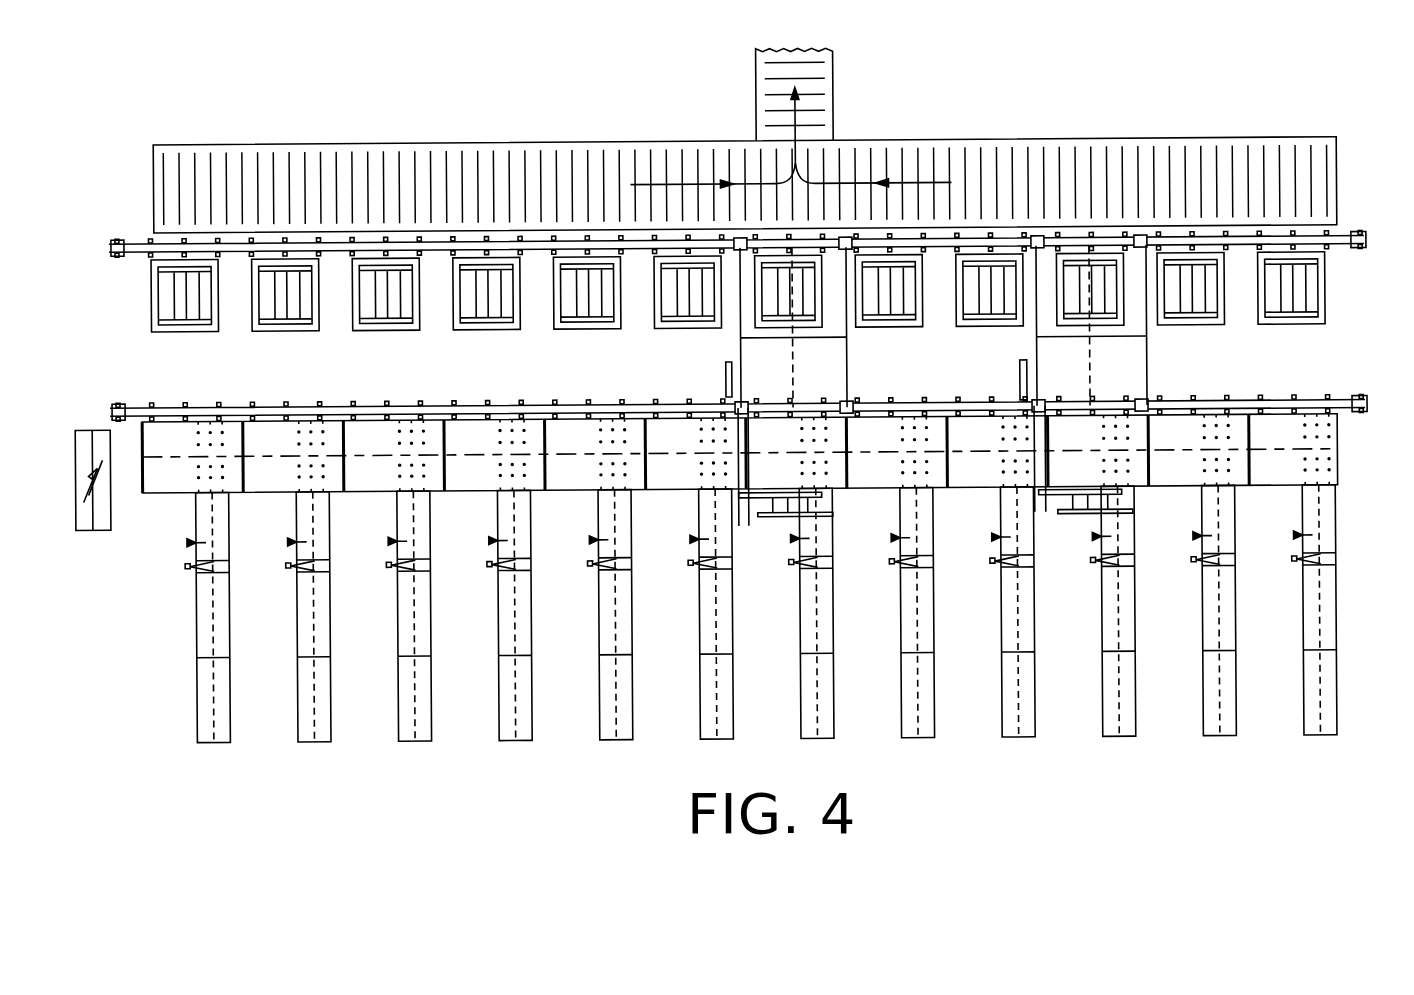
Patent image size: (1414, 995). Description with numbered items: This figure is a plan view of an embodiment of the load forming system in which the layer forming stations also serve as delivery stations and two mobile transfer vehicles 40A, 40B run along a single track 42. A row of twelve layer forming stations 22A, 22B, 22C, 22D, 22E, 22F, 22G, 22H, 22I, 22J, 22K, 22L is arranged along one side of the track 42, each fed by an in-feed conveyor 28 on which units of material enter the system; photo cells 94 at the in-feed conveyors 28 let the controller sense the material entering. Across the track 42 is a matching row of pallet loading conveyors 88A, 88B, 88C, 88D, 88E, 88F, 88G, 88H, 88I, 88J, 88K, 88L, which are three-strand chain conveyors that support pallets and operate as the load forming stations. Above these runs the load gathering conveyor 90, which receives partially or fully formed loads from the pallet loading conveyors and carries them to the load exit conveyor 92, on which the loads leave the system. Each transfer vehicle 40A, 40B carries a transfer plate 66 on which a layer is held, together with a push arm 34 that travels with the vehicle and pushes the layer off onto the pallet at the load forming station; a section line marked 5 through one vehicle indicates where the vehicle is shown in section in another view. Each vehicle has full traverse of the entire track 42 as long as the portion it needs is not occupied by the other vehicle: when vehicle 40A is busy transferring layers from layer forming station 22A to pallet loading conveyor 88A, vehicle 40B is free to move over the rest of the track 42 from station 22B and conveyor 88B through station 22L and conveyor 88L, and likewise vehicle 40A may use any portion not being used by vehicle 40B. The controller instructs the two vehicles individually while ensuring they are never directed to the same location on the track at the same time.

The load gathering conveyor 90 is at (990, 143).
The load exit conveyor 92 is at (835, 105).
The track 42 is at (1357, 258).
The section line of FIG. 5 is at (885, 221).
The pallet loading conveyor 88A is at (190, 333).
The pallet loading conveyor 88B is at (287, 334).
The pallet loading conveyor 88C is at (380, 333).
The pallet loading conveyor 88D is at (478, 332).
The pallet loading conveyor 88E is at (567, 332).
The pallet loading conveyor 88F is at (657, 322).
The pallet loading conveyor 88G is at (785, 334).
The pallet loading conveyor 88H is at (927, 312).
The pallet loading conveyor 88I is at (960, 326).
The pallet loading conveyor 88J is at (1053, 324).
The pallet loading conveyor 88K is at (1223, 315).
The pallet loading conveyor 88L is at (1326, 318).
The mobile transfer vehicle 40A is at (741, 344).
The mobile transfer vehicle 40B is at (1148, 365).
The transfer plate 66 is at (830, 381).
The layer forming station 22A is at (177, 495).
The layer forming station 22B is at (277, 496).
The layer forming station 22C is at (380, 496).
The layer forming station 22D is at (483, 497).
The layer forming station 22E is at (582, 497).
The layer forming station 22F is at (677, 493).
The layer forming station 22G is at (748, 494).
The layer forming station 22H is at (893, 495).
The layer forming station 22I is at (968, 494).
The layer forming station 22J is at (1058, 496).
The layer forming station 22K is at (1182, 495).
The layer forming station 22L is at (1278, 496).
The in-feed conveyor 28 is at (295, 712).
The photo cell 94 is at (190, 572).
The push arm 34 is at (783, 521).